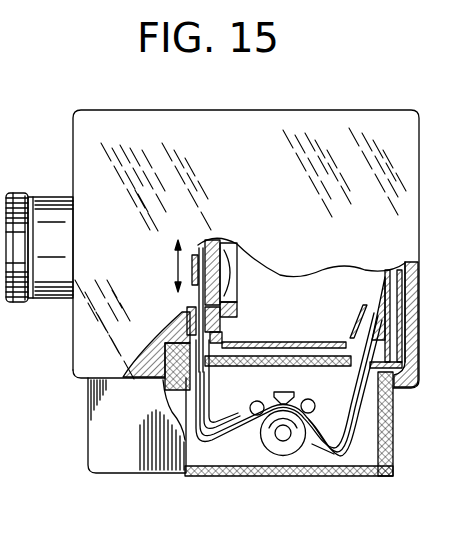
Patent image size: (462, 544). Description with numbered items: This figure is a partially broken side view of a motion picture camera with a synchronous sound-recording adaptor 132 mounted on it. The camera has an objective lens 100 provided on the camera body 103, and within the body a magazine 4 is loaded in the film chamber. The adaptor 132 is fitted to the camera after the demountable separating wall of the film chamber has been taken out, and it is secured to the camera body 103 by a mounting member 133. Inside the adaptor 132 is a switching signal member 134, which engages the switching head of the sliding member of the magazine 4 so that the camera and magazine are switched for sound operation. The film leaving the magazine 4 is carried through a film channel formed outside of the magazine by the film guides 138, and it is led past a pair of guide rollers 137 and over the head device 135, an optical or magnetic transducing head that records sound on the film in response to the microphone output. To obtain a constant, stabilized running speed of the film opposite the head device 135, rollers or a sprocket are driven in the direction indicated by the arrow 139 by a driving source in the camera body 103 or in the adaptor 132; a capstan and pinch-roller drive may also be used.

The magazine 4 is at (336, 295).
The objective lens 100 is at (50, 208).
The camera body 103 is at (374, 134).
The adaptor 132 is at (130, 452).
The mounting member 133 is at (4, 330).
The switching signal member 134 is at (185, 348).
The head device 135 is at (283, 396).
The guide rollers 137 is at (309, 398).
The film guides 138 is at (243, 442).
The movement direction arrow 139 is at (175, 263).